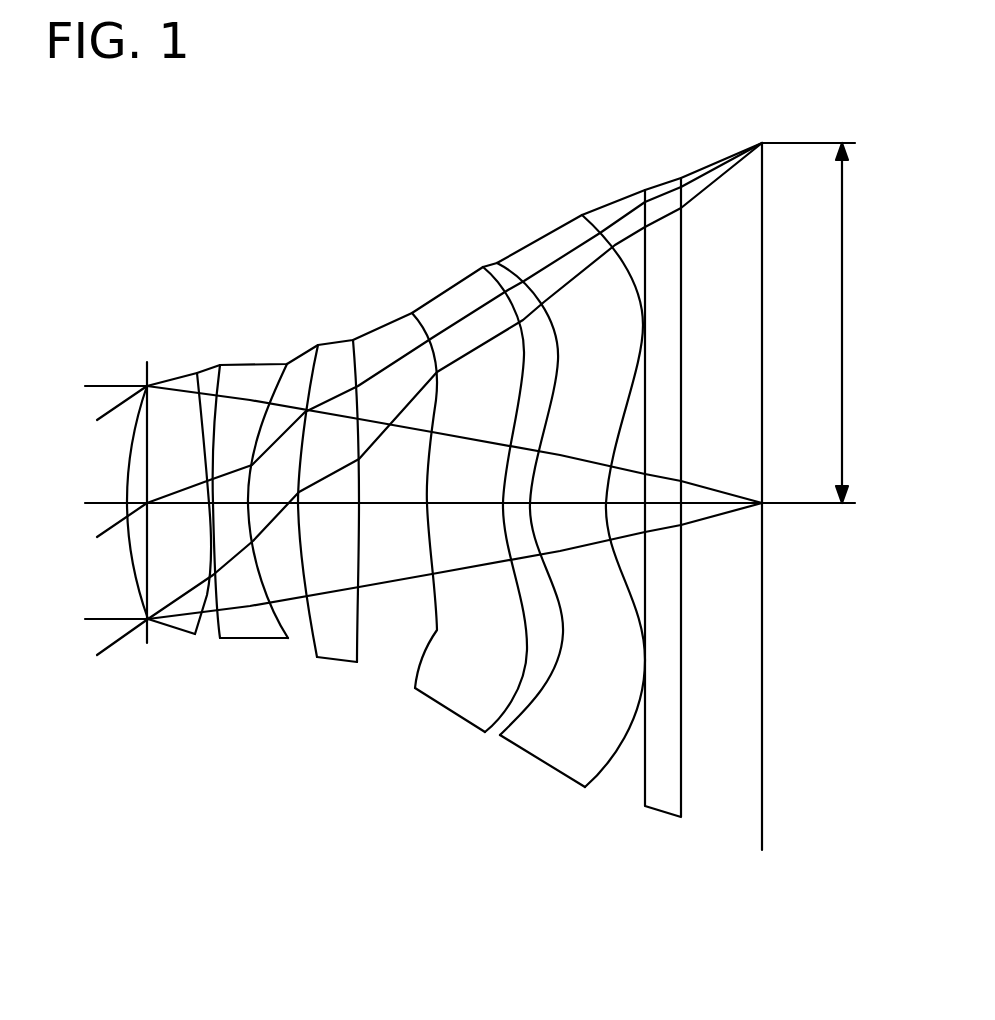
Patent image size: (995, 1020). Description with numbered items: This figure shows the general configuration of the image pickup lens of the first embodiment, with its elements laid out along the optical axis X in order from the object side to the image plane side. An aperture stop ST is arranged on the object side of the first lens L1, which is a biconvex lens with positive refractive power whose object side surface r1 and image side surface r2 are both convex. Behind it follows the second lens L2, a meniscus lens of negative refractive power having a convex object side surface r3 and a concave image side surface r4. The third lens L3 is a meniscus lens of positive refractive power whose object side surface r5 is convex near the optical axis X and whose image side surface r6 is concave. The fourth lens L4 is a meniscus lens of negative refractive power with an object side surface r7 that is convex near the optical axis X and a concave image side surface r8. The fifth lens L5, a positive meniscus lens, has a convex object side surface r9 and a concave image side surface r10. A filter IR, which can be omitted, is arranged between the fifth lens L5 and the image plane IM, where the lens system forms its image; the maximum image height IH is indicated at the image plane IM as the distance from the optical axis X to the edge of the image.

The optical axis X is at (93, 503).
The aperture stop ST is at (147, 458).
The first lens L1 is at (139, 489).
The second lens L2 is at (255, 484).
The third lens L3 is at (353, 483).
The fourth lens L4 is at (452, 499).
The fifth lens L5 is at (548, 501).
The object side surface of first lens r1 is at (130, 555).
The image side surface of first lens r2 is at (208, 585).
The object side surface of second lens r3 is at (220, 640).
The image side surface of second lens r4 is at (278, 620).
The object side surface of third lens r5 is at (305, 625).
The image side surface of third lens r6 is at (360, 632).
The object side surface of fourth lens r7 is at (438, 632).
The image side surface of fourth lens r8 is at (518, 600).
The object side surface of fifth lens r9 is at (557, 645).
The image side surface of fifth lens r10 is at (613, 762).
The filter IR is at (657, 184).
The image plane IM is at (762, 775).
The maximum image height IH is at (808, 323).